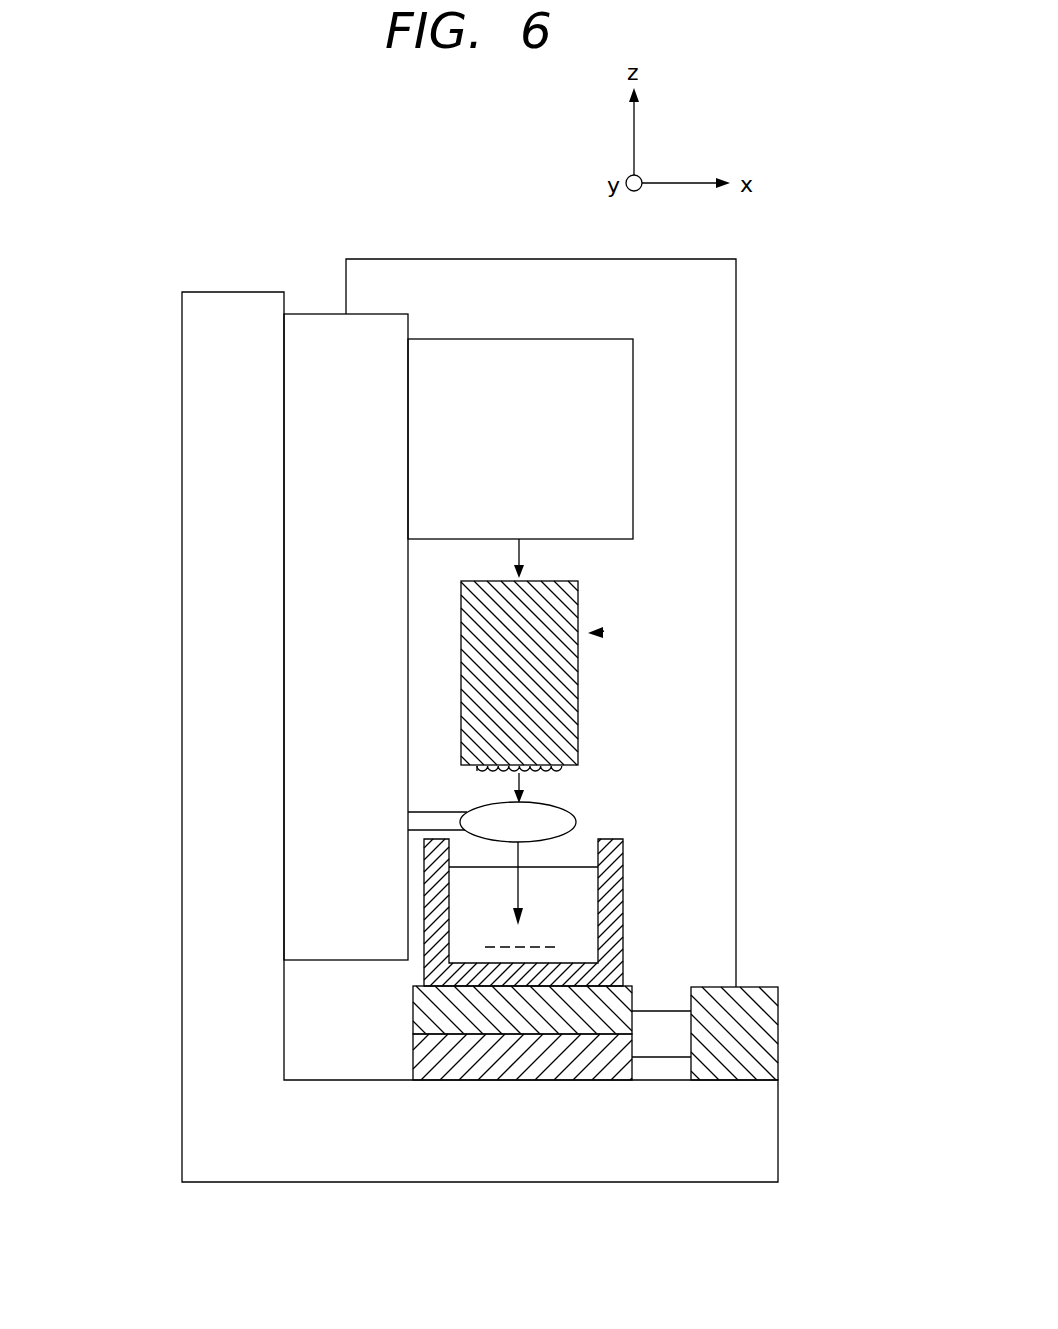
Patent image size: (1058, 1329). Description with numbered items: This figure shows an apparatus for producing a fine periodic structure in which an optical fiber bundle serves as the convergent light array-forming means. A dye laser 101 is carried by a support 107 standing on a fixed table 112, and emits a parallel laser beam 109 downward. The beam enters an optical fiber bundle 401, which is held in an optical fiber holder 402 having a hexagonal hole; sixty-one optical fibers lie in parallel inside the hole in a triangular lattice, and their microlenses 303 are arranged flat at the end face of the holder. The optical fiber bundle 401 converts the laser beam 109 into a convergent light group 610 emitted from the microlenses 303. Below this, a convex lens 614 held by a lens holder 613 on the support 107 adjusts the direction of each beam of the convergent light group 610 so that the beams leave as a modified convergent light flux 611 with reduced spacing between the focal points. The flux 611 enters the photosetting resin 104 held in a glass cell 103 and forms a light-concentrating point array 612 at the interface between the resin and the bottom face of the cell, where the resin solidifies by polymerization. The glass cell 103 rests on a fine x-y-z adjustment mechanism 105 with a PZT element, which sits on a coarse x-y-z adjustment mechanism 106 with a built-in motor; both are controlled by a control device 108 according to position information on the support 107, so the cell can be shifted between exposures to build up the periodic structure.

The dye laser 101 is at (613, 440).
The glass cell 103 is at (613, 890).
The photosetting resin 104 is at (583, 931).
The fine x-y-z adjustment mechanism 105 is at (603, 1020).
The coarse x-y-z adjustment mechanism 106 is at (558, 1067).
The support 107 is at (320, 330).
The control device 108 is at (762, 1035).
The laser beam 109 is at (519, 553).
The fixed table 112 is at (195, 482).
The microlens 303 is at (465, 777).
The optical fiber bundle 401 is at (603, 632).
The optical fiber holder 402 is at (482, 650).
The convergent light group 610 is at (522, 777).
The modified convergent light flux 611 is at (518, 858).
The light-concentrating point array 612 is at (500, 948).
The lens holder 613 is at (412, 820).
The convex lens 614 is at (555, 818).